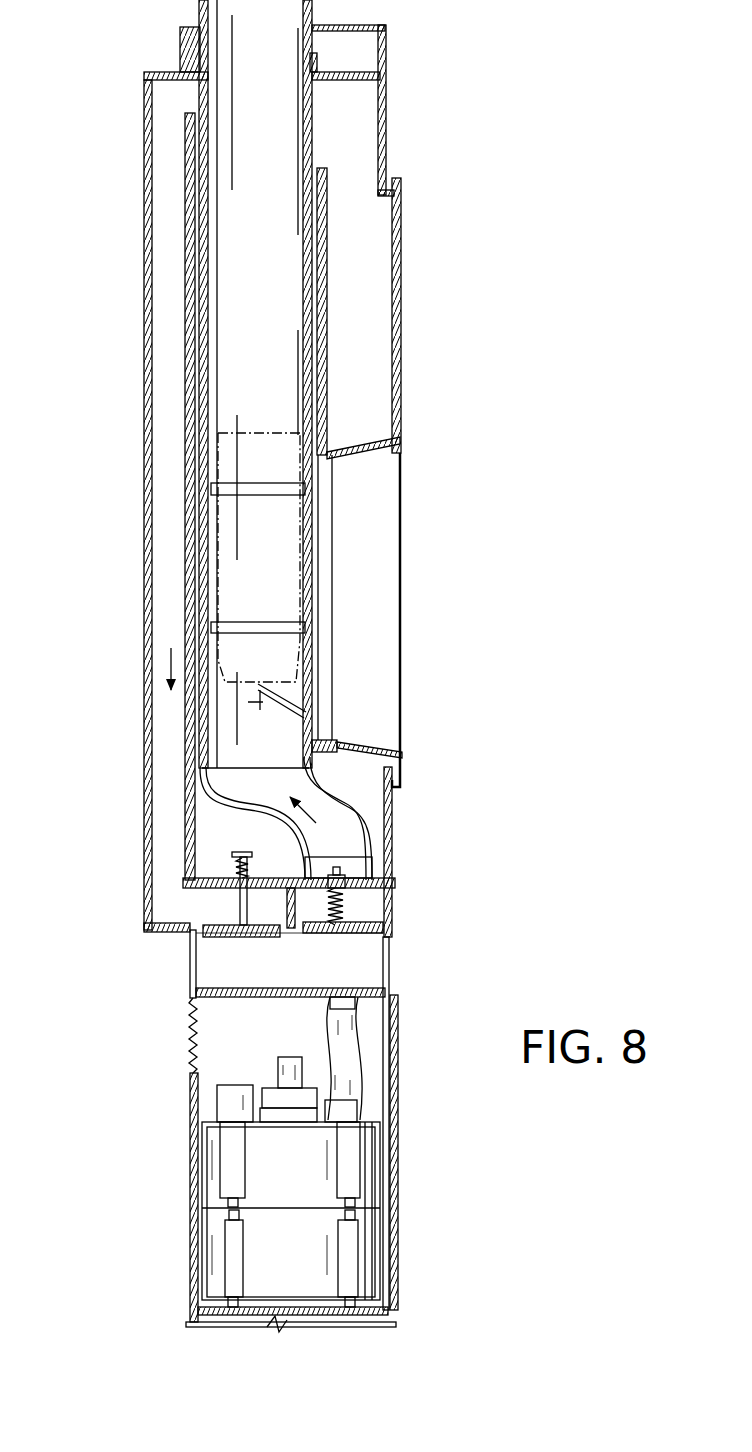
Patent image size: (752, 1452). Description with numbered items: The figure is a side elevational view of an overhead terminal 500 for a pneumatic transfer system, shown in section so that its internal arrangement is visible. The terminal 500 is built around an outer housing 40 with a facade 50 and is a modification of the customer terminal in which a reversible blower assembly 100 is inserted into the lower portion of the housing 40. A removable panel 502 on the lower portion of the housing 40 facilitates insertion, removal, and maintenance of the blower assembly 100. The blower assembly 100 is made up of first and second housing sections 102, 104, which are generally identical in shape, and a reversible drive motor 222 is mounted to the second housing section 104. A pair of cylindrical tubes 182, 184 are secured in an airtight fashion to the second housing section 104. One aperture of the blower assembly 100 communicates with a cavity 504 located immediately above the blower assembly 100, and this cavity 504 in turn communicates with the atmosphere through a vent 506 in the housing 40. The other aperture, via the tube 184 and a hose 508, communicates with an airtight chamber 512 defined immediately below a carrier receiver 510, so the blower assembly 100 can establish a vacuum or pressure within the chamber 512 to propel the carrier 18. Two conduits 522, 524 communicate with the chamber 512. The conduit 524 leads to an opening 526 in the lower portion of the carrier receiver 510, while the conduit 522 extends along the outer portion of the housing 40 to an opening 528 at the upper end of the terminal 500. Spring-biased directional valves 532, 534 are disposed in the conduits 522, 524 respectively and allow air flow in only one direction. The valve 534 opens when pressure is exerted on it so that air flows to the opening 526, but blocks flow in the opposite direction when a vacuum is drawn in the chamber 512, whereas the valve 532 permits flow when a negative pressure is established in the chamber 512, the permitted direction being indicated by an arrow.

The carrier 18 is at (295, 568).
The outer housing 40 is at (396, 954).
The facade 50 is at (404, 256).
The reversible blower assembly 100 is at (390, 1164).
The first housing section 102 is at (378, 1262).
The second housing section 104 is at (378, 1187).
The cylindrical tube 182 is at (227, 1100).
The cylindrical tube 184 is at (360, 1117).
The reversible drive motor 222 is at (277, 1067).
The overhead terminal 500 is at (490, 600).
The removable panel 502 is at (397, 1122).
The cavity 504 is at (218, 1018).
The vent 506 is at (190, 1027).
The hose 508 is at (358, 1040).
The carrier receiver 510 is at (196, 589).
The airtight chamber 512 is at (380, 972).
The conduit 522 is at (167, 778).
The conduit 524 is at (345, 818).
The opening 526 is at (290, 695).
The opening 528 is at (202, 92).
The spring-biased valve 532 is at (217, 920).
The spring-biased valve 534 is at (363, 920).